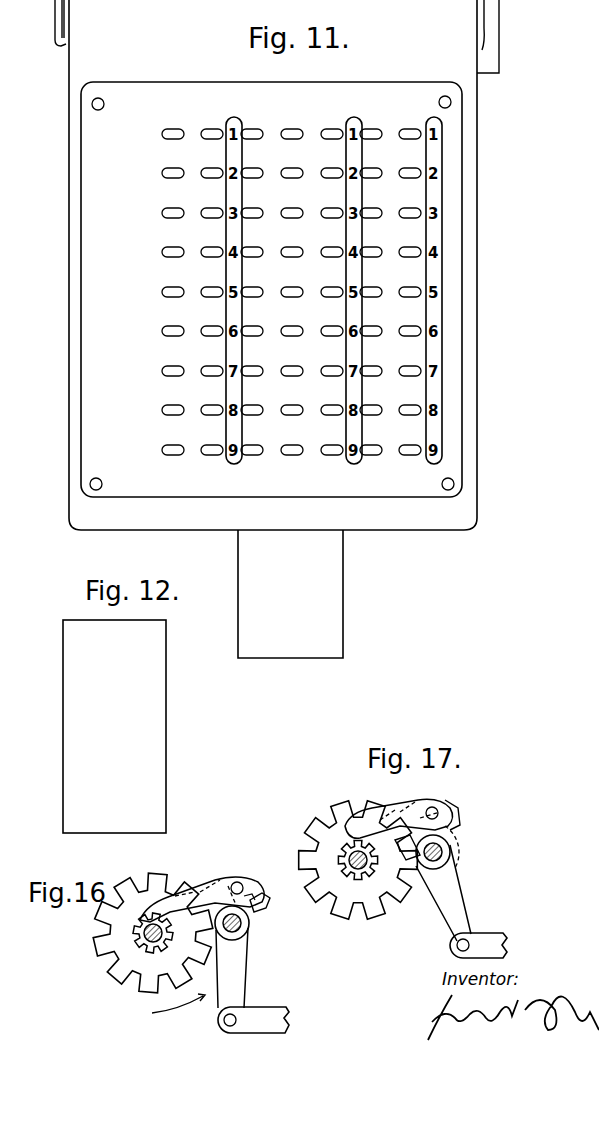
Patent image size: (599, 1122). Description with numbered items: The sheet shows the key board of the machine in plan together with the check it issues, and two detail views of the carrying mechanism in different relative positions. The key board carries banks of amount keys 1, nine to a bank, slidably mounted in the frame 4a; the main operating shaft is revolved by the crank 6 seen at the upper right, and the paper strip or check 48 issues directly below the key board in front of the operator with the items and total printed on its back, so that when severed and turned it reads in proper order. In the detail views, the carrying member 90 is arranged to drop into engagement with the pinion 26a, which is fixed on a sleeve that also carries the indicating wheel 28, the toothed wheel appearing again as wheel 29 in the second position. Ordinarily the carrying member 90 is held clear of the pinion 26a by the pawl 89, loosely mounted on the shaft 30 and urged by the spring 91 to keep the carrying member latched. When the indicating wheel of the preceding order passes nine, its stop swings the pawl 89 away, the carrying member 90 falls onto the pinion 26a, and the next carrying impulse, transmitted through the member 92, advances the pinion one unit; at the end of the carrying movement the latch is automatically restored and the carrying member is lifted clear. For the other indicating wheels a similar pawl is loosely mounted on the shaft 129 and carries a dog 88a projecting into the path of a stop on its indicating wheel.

In FIG. 11, the amount keys 1 is at (288, 130).
In FIG. 11, the frame 4a is at (125, 92).
In FIG. 11, the crank 6 is at (494, 30).
In FIG. 11, the record strip 48 is at (331, 600).
In FIG. 12, the record strip 48 is at (160, 738).
In FIG. 11, the shaft 129 is at (60, 46).
In FIG. 16, the pinion 26a is at (142, 948).
In FIG. 17, the pinion 26a is at (356, 882).
In FIG. 16, the indicating wheel 28 is at (166, 882).
In FIG. 17, the pawl 29 is at (340, 857).
In FIG. 17, the shaft 30 is at (445, 853).
In FIG. 17, the dog 88a is at (410, 862).
In FIG. 16, the pawl 89 is at (266, 904).
In FIG. 17, the pawl 89 is at (447, 811).
In FIG. 16, the carrying member 90 is at (160, 900).
In FIG. 17, the carrying member 90 is at (352, 822).
In FIG. 16, the spring 91 is at (238, 881).
In FIG. 16, the member 92 is at (240, 968).
In FIG. 17, the member 92 is at (456, 896).